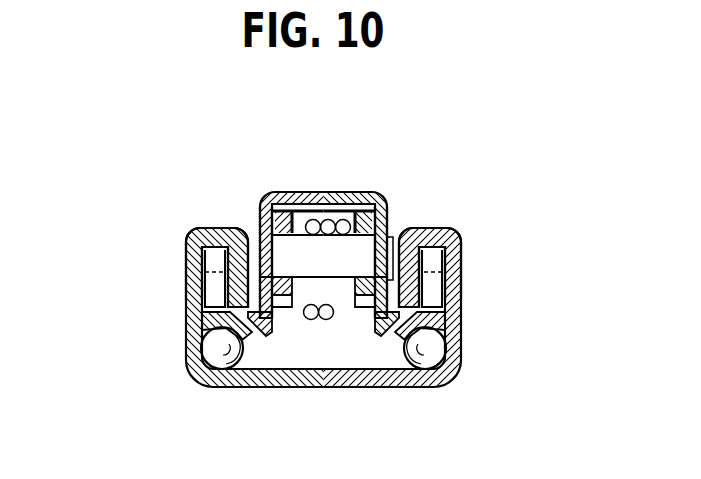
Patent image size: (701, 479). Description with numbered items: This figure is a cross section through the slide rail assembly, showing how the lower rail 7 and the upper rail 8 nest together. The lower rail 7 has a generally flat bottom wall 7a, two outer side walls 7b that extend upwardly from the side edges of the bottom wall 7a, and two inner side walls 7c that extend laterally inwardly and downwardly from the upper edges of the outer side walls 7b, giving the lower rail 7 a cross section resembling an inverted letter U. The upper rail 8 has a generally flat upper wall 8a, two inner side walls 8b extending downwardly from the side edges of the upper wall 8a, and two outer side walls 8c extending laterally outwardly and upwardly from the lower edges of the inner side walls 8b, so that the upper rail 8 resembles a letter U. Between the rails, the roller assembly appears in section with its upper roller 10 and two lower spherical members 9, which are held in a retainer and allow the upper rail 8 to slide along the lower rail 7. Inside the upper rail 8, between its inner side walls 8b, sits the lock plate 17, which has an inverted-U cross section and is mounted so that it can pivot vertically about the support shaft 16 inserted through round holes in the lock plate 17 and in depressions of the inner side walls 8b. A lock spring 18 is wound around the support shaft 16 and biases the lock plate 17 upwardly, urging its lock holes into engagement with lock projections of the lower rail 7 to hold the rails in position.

The lower rail 7 is at (188, 370).
The bottom wall 7a is at (360, 388).
The outer side walls 7b is at (208, 286).
The inner side walls 7c is at (212, 310).
The upper rail 8 is at (268, 200).
The upper wall 8a is at (347, 192).
The inner side walls 8b is at (268, 202).
The outer side walls 8c is at (235, 312).
The lower spherical members 9 is at (222, 372).
The upper roller 10 is at (212, 258).
The support shaft 16 is at (302, 268).
The lock plate 17 is at (290, 208).
The lock spring 18 is at (330, 219).